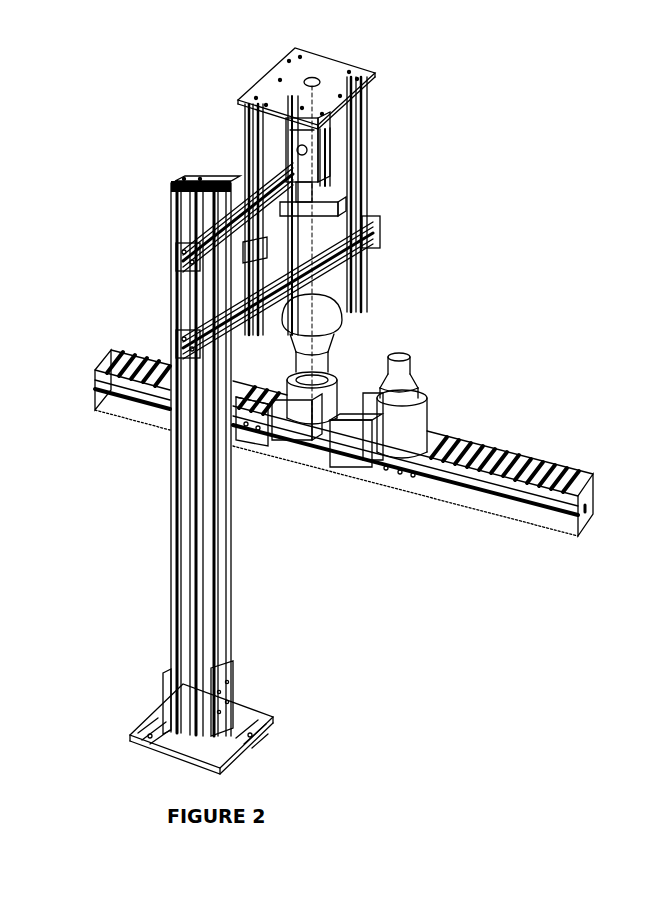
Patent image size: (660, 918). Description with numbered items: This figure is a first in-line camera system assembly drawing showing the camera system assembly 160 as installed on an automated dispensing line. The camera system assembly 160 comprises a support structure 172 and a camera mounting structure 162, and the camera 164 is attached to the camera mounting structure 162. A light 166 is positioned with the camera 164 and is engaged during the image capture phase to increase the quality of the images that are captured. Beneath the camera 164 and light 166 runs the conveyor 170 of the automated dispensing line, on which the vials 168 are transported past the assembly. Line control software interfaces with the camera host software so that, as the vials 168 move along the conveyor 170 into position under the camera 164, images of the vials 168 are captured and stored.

The camera system assembly 160 is at (213, 108).
The camera mounting structure 162 is at (348, 59).
The camera 164 is at (318, 147).
The light 166 is at (318, 317).
The vials 168 is at (347, 360).
The conveyor 170 is at (493, 520).
The support structure 172 is at (254, 577).